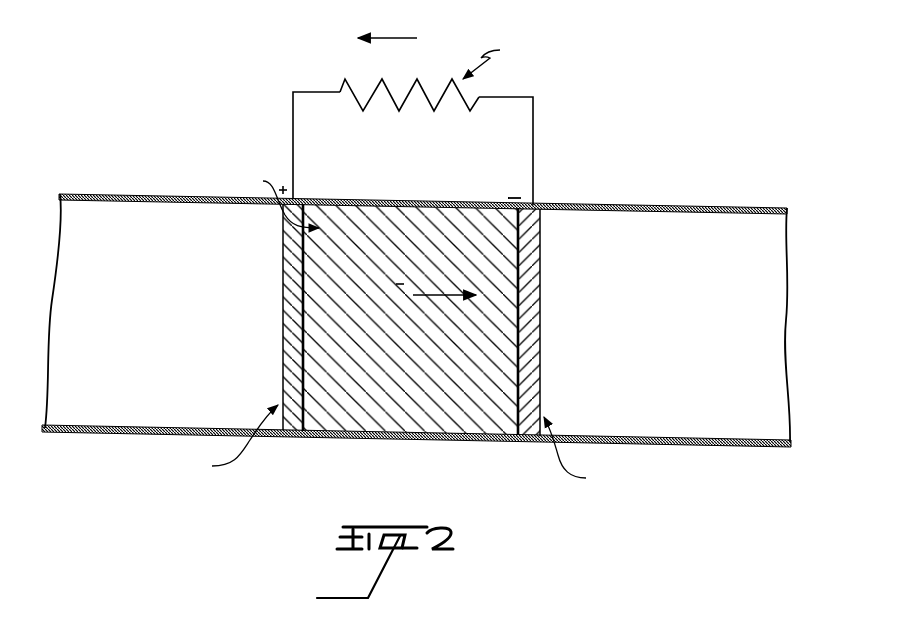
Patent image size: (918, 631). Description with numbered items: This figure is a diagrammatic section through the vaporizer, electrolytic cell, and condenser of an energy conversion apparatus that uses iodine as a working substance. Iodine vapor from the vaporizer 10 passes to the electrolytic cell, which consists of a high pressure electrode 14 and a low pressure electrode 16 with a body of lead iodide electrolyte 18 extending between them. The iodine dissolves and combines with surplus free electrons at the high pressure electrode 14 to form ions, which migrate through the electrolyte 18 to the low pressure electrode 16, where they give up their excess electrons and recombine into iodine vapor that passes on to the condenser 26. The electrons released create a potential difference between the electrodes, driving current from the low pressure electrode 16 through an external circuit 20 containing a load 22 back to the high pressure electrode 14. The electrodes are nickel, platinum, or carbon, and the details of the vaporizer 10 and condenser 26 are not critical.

The vaporizer 10 is at (60, 236).
The high pressure electrode 14 is at (283, 258).
The low pressure electrode 16 is at (540, 375).
The electrolyte 18 is at (390, 438).
The external circuit 20 is at (537, 152).
The load 22 is at (365, 92).
The condenser 26 is at (727, 430).